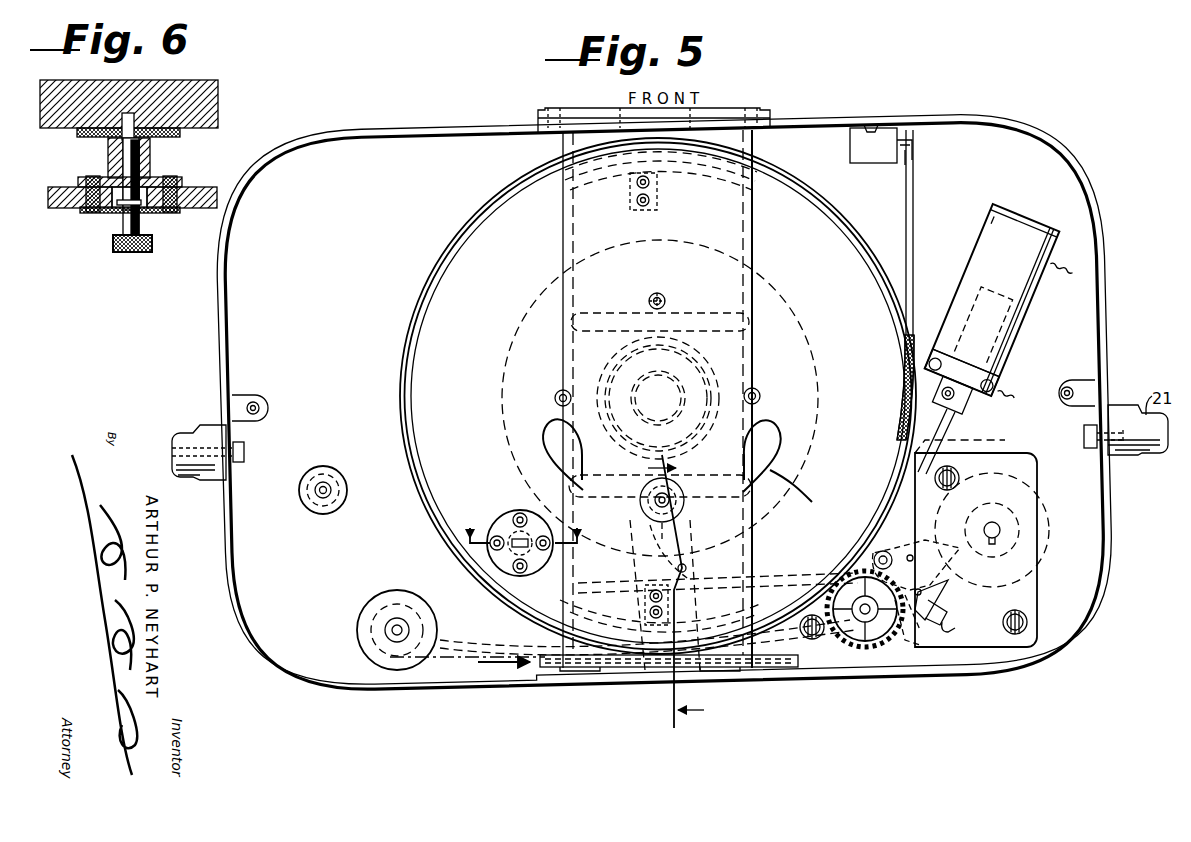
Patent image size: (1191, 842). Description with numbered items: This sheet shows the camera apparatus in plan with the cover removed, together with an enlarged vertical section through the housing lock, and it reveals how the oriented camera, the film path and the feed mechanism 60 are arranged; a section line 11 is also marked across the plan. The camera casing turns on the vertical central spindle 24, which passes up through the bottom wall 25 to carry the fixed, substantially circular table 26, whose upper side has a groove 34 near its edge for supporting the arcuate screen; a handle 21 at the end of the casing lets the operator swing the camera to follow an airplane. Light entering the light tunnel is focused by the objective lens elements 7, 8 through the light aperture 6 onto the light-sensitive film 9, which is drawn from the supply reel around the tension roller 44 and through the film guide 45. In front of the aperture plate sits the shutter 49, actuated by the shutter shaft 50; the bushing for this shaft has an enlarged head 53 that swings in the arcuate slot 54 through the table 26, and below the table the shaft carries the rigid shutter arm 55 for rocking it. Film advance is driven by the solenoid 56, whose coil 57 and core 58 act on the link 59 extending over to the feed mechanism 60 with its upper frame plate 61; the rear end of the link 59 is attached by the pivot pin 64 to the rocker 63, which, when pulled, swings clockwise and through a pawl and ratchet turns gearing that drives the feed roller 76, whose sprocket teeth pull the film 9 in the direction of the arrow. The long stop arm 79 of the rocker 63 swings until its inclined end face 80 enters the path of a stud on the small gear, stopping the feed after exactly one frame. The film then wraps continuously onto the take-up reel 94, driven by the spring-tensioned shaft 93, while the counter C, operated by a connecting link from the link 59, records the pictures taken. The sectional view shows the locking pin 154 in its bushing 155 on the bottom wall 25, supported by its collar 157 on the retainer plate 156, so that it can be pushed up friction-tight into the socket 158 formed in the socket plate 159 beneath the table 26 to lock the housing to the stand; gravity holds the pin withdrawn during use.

In FIG. 5, the light aperture 6 is at (642, 696).
In FIG. 5, the lens element 7 is at (700, 318).
In FIG. 5, the lens element 8 is at (735, 445).
In FIG. 5, the light-sensitive film 9 is at (490, 656).
In FIG. 5, the section line 11- 11 is at (686, 588).
In FIG. 5, the handle 21 is at (200, 426).
In FIG. 5, the central spindle 24 is at (635, 395).
In FIG. 6, the bottom wall 25 is at (190, 210).
In FIG. 6, the table 26 is at (212, 96).
In FIG. 5, the table 26 is at (456, 268).
In FIG. 5, the groove 34 is at (420, 316).
In FIG. 5, the tension roller 44 is at (357, 636).
In FIG. 5, the film guide 45 is at (548, 655).
In FIG. 5, the shutter 49 is at (672, 612).
In FIG. 5, the shutter shaft 50 is at (652, 520).
In FIG. 5, the enlarged head 53 is at (685, 540).
In FIG. 5, the arcuate slot 54 is at (780, 461).
In FIG. 5, the shutter arm 55 is at (650, 572).
In FIG. 5, the solenoid 56 is at (1012, 327).
In FIG. 5, the coil 57 is at (1002, 370).
In FIG. 5, the core 58 is at (968, 400).
In FIG. 5, the link 59 is at (776, 578).
In FIG. 5, the feed mechanism 60 is at (1020, 562).
In FIG. 5, the upper frame plate 61 is at (1037, 586).
In FIG. 5, the rocker 63 is at (924, 548).
In FIG. 5, the pivot pin 64 is at (937, 599).
In FIG. 5, the feed roller 76 is at (870, 646).
In FIG. 5, the stop arm 79 is at (945, 612).
In FIG. 5, the inclined end face 80 is at (962, 623).
In FIG. 5, the shaft 93 is at (996, 527).
In FIG. 5, the take-up reel 94 is at (1048, 530).
In FIG. 6, the locking pin 154 is at (122, 226).
In FIG. 5, the locking pin 154 is at (530, 550).
In FIG. 6, the bushing 155 is at (148, 161).
In FIG. 6, the retainer plate 156 is at (150, 210).
In FIG. 6, the collar 157 is at (116, 215).
In FIG. 6, the socket 158 is at (133, 118).
In FIG. 6, the socket plate 159 is at (82, 137).
In FIG. 5, the counter C is at (913, 292).